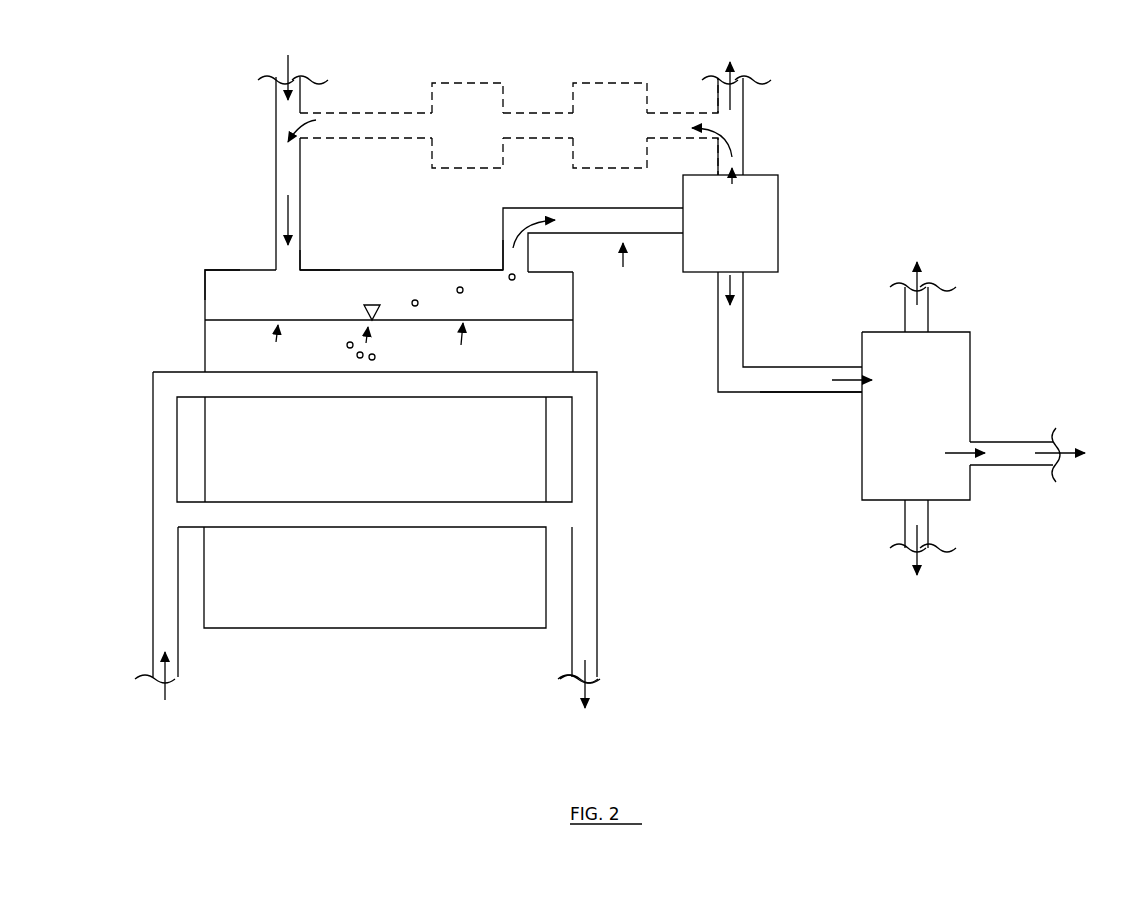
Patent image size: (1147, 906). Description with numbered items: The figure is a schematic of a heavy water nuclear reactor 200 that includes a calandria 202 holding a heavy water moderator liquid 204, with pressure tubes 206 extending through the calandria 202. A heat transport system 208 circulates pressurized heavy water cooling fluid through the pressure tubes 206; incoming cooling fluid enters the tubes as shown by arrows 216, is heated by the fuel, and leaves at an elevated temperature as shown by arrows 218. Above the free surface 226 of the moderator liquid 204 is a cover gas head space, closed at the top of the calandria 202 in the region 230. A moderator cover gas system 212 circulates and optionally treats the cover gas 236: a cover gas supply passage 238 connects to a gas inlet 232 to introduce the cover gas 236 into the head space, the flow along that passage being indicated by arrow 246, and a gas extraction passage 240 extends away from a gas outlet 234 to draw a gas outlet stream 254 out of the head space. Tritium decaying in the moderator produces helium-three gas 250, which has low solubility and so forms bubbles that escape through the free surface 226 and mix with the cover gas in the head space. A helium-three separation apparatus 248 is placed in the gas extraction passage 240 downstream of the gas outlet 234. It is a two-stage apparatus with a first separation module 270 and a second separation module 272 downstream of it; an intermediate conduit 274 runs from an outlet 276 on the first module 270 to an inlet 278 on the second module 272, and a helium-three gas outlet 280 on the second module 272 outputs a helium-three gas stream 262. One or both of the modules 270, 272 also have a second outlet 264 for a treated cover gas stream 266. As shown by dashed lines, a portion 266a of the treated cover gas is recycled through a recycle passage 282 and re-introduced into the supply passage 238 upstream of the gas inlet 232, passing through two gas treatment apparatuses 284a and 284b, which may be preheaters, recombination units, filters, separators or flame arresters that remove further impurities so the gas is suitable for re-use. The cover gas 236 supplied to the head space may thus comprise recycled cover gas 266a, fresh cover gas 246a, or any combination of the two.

The reactor 200 is at (150, 152).
The calandria 202 is at (575, 356).
The heavy water moderator liquid 204 is at (225, 340).
The pressure tubes 206 is at (290, 400).
The heat transport system 208 is at (625, 618).
The moderator cover gas system 212 is at (858, 125).
The arrows indicating incoming cooling fluid 216 is at (164, 684).
The arrows indicating exiting cooling fluid 218 is at (581, 690).
The free surface 226 is at (361, 349).
The top wall 230 is at (223, 268).
The gas inlet 232 is at (303, 268).
The gas outlet 234 is at (502, 268).
The cover gas 236 is at (278, 306).
The cover gas supply passage 238 is at (275, 160).
The gas extraction passage 240 is at (593, 251).
The gas flow 246 is at (287, 222).
The fresh cover gas 246a is at (293, 75).
The 3He separation apparatus 248 is at (872, 200).
The 3He gas 250 is at (348, 348).
The gas outlet stream 254 is at (375, 351).
The 3He gas stream 262 is at (1070, 455).
The second outlet 264 is at (747, 117).
The treated cover gas stream 266 is at (733, 181).
The recycled portion of treated cover gas 266a is at (309, 125).
The first separation module 270 is at (780, 236).
The second separation module 272 is at (970, 356).
The intermediate conduit 274 is at (800, 395).
The outlet 276 is at (745, 276).
The inlet 278 is at (860, 395).
The 3He gas outlet 280 is at (972, 470).
The recycle passage 282 is at (703, 40).
The gas treatment apparatus 284a is at (598, 82).
The gas treatment apparatus 284b is at (455, 82).